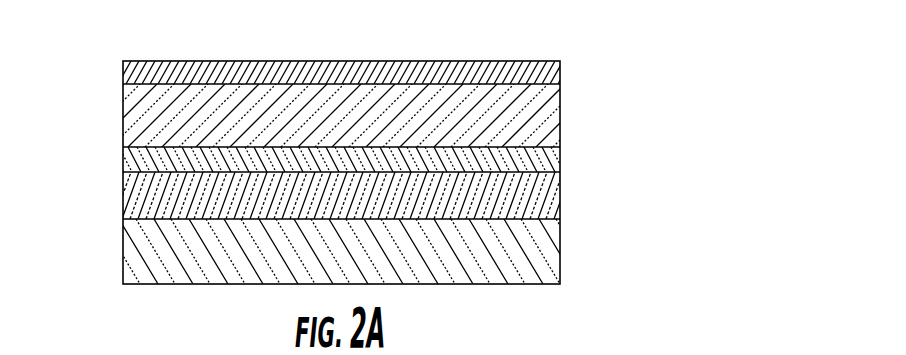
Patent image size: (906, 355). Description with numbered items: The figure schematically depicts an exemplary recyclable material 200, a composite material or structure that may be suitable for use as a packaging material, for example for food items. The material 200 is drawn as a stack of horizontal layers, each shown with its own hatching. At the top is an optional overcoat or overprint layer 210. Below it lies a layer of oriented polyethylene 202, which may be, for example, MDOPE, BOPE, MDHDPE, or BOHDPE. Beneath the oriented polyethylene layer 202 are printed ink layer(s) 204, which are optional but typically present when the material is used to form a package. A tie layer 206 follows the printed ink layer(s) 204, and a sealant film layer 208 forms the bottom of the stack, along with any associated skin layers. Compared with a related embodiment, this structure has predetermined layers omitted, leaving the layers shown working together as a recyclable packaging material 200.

The recyclable material 200 is at (683, 75).
The overcoat or overprint layer 210 is at (122, 76).
The layer of oriented polyethylene 202 is at (560, 110).
The printed ink layer 204 is at (560, 168).
The tie layer 206 is at (560, 208).
The sealant film layer 208 is at (560, 255).